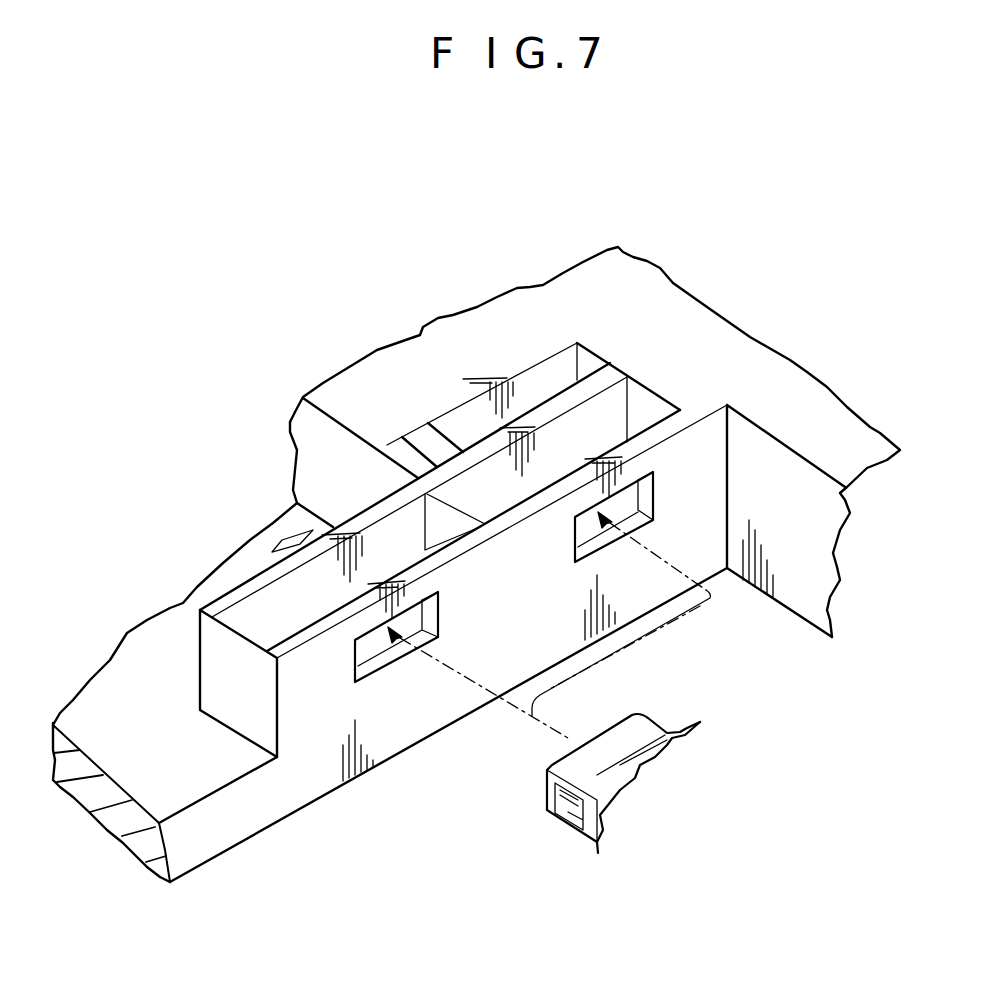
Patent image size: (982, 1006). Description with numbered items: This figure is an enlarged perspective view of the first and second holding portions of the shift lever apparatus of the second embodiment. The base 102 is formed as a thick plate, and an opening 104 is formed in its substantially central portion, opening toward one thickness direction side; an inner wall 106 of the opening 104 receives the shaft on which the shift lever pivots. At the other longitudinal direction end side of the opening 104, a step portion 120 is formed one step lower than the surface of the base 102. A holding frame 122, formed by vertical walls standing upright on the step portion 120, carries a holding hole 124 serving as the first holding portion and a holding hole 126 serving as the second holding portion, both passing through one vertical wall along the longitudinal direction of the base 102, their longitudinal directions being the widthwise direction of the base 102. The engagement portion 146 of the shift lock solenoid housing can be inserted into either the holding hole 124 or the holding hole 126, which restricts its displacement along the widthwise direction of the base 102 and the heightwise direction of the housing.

The base 102 is at (648, 317).
The opening 104 is at (260, 870).
The inner wall 106 is at (780, 483).
The step portion 120 is at (130, 693).
The holding frame 122 is at (238, 664).
The holding hole 124 is at (640, 503).
The holding hole 126 is at (372, 660).
The engagement portion 146 is at (583, 765).